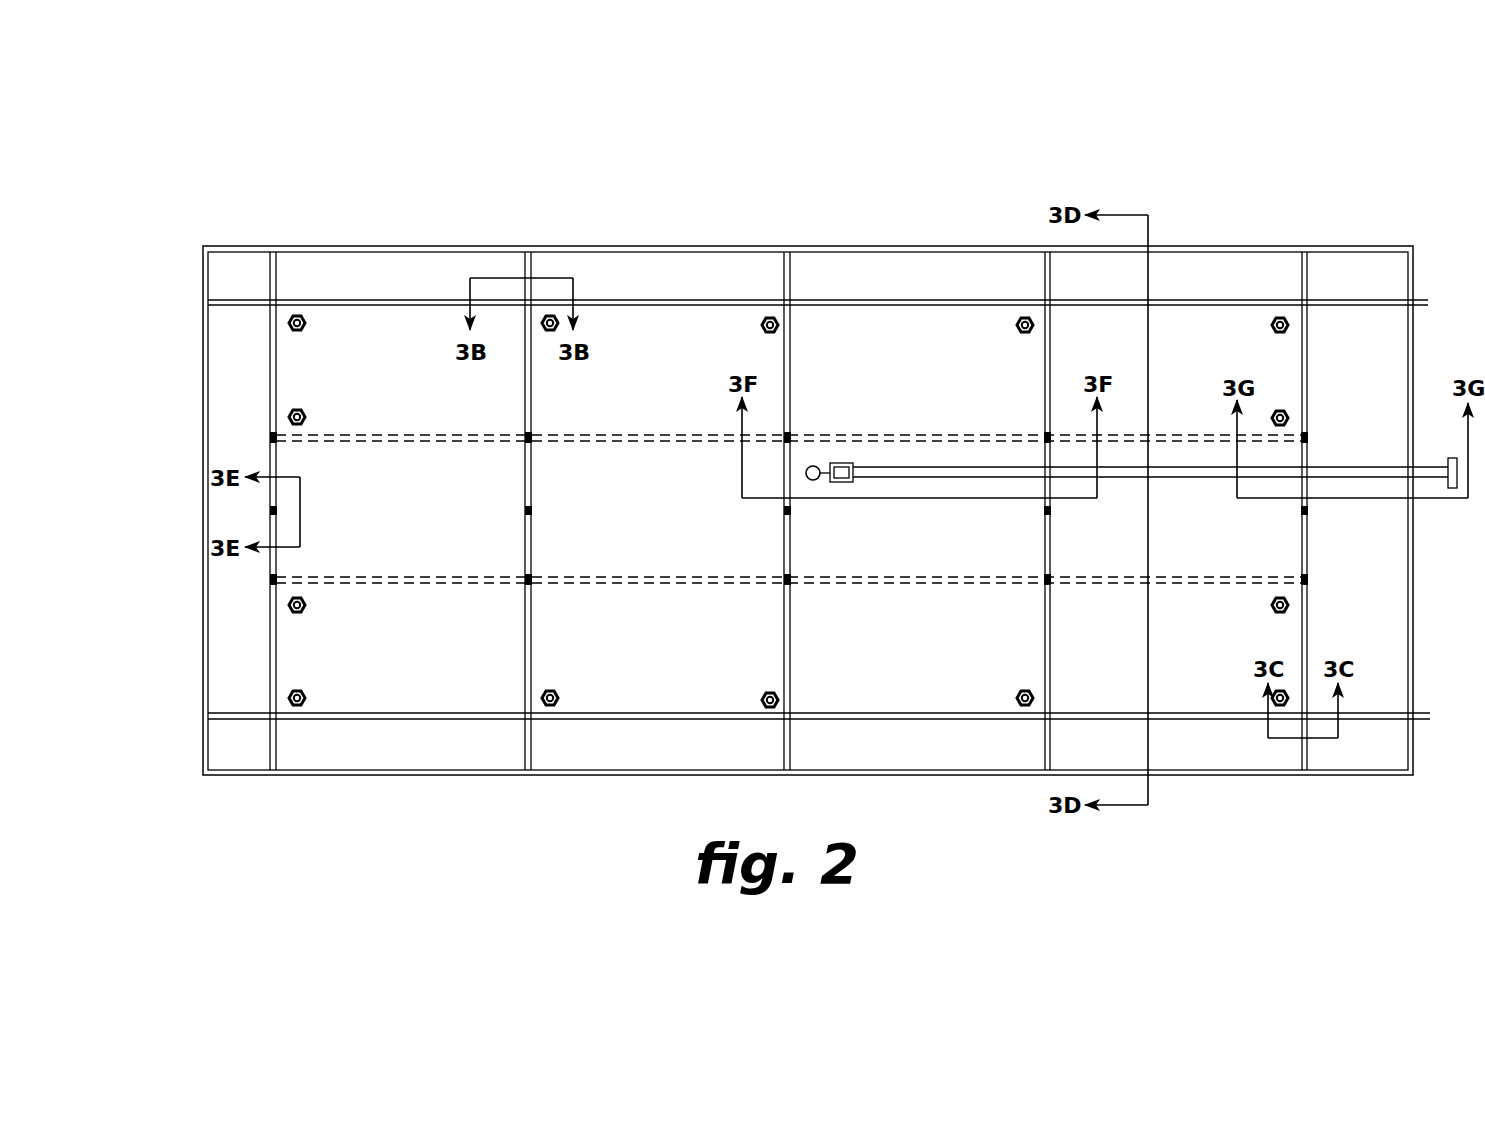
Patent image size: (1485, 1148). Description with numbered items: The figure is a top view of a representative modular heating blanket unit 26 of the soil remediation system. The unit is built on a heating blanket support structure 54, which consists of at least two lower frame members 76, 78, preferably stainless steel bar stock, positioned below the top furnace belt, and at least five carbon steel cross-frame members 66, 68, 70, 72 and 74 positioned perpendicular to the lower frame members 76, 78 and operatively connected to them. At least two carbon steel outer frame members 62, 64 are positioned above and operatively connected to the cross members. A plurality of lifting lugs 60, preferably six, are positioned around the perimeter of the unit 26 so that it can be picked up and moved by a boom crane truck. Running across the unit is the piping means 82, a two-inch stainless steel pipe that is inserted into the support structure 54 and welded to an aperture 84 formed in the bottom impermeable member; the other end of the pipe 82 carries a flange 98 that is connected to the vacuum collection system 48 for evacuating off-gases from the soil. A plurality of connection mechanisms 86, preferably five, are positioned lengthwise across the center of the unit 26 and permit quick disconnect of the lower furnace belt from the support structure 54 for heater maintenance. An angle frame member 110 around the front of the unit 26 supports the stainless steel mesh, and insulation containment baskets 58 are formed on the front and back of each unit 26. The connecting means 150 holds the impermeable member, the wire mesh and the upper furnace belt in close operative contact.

The heating blanket unit 26 is at (895, 205).
The vacuum collection system 48 is at (1430, 427).
The heating blanket support structure 54 is at (775, 552).
The insulation containment baskets 58 is at (1225, 282).
The lifting lugs 60 is at (282, 300).
The outer frame member 62 is at (1237, 722).
The outer frame member 64 is at (1172, 302).
The cross-frame member 66 is at (1307, 628).
The cross-frame member 68 is at (1050, 620).
The cross-frame member 70 is at (790, 627).
The cross-frame member 72 is at (531, 648).
The cross-frame member 74 is at (276, 648).
The lower frame member 76 is at (1175, 583).
The lower frame member 78 is at (938, 436).
The piping means 82 is at (1182, 470).
The aperture 84 is at (813, 465).
The connection mechanism 86 is at (525, 510).
The flange 98 is at (1448, 462).
The angle frame member 110 is at (945, 249).
The connecting means 150 is at (1020, 325).